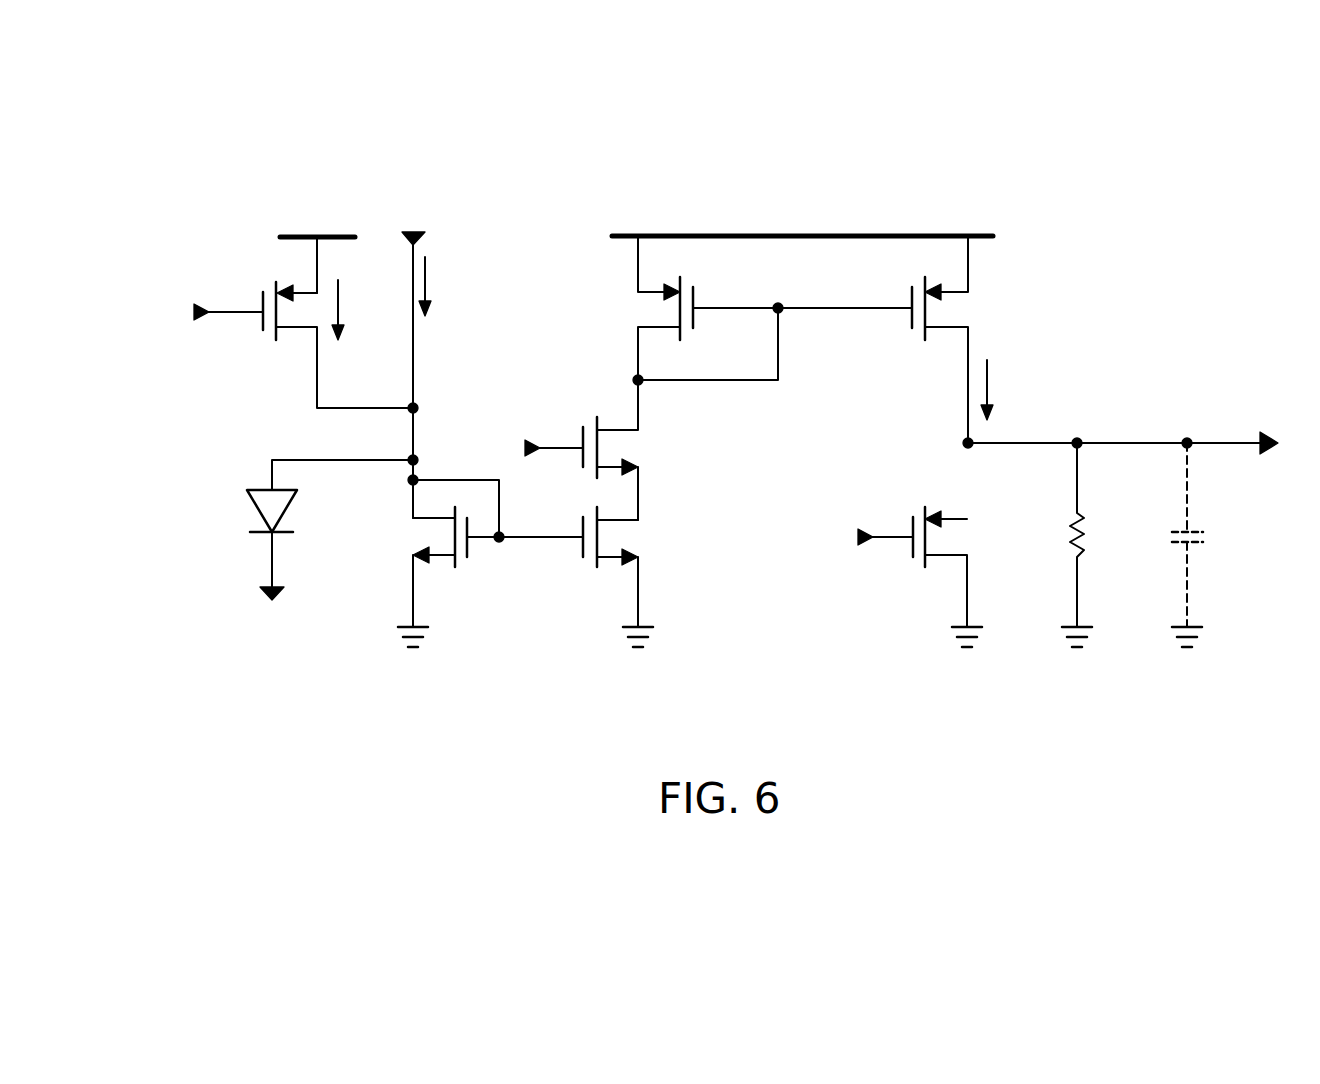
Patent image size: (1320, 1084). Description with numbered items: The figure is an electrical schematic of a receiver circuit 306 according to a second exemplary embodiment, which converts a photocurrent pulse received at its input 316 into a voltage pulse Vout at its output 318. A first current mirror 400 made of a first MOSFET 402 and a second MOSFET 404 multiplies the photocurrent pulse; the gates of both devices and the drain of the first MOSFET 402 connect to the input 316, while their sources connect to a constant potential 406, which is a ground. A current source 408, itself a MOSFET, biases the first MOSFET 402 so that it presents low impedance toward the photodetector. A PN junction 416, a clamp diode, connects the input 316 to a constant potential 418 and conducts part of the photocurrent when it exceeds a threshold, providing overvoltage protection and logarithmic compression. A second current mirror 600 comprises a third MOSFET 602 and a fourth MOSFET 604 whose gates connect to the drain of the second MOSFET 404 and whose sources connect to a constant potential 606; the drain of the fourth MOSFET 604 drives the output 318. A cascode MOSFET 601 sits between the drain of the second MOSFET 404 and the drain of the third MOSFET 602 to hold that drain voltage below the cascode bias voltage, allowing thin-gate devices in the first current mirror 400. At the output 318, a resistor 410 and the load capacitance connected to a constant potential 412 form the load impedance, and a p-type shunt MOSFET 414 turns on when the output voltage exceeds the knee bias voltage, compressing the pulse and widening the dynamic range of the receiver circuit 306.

The input 316 is at (403, 244).
The current source 408 is at (262, 341).
The PN junction 416 is at (258, 489).
The constant potential 418 is at (266, 586).
The first MOSFET 402 is at (455, 568).
The second MOSFET 404 is at (597, 568).
The constant potential 406 is at (399, 627).
The first current mirror 400 is at (530, 620).
The cascode MOSFET 601 is at (597, 419).
The third MOSFET 602 is at (693, 330).
The fourth MOSFET 604 is at (912, 330).
The constant potential 606 is at (803, 233).
The second current mirror 600 is at (817, 398).
The shunt MOSFET 414 is at (913, 557).
The resistor 410 is at (1068, 542).
The constant potential 412 is at (983, 627).
The output 318 is at (1235, 447).
The receiver circuit 306 is at (940, 698).